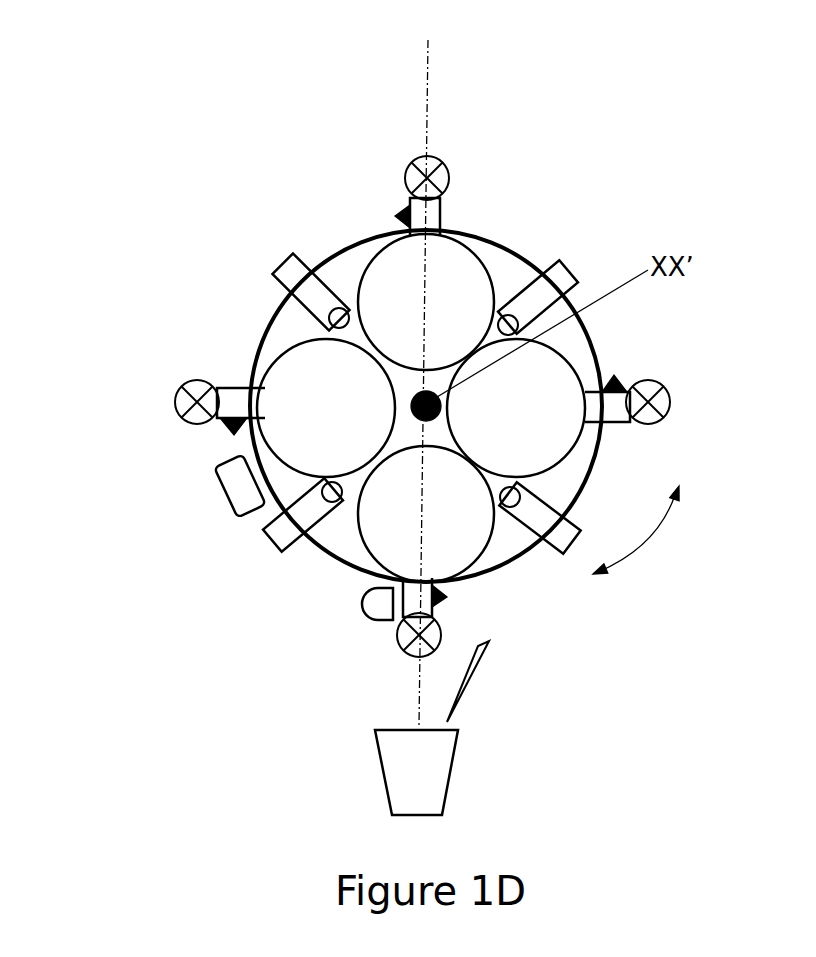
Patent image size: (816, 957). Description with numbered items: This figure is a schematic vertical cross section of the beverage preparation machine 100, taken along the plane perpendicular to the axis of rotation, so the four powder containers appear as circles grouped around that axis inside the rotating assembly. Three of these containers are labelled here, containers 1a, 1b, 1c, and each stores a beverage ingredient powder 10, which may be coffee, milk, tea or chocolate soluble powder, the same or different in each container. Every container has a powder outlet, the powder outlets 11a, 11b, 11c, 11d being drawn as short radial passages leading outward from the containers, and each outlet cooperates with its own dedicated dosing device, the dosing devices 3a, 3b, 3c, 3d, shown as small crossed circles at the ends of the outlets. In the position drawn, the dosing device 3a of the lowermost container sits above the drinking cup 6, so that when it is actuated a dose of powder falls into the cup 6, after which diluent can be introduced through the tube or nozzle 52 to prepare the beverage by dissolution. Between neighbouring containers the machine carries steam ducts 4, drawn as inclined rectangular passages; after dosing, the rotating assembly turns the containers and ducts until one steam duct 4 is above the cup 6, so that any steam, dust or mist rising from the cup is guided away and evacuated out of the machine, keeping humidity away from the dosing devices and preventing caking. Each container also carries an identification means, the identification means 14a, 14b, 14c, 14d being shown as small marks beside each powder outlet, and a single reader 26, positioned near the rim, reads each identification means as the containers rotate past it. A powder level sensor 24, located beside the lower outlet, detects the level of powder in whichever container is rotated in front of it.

The beverage preparation machine 100 is at (401, 302).
The beverage ingredient powder 10 is at (396, 349).
The container 1a is at (490, 523).
The container 1b is at (290, 345).
The container 1c is at (483, 267).
The dosing device 3a is at (403, 645).
The dosing device 3b is at (185, 380).
The dosing device 3c is at (458, 175).
The dosing device 3d is at (677, 401).
The steam duct 4 is at (268, 540).
The drinking cup 6 is at (458, 747).
The powder outlet 11a is at (433, 612).
The powder outlet 11b is at (225, 385).
The powder outlet 11c is at (443, 212).
The powder outlet 11d is at (610, 428).
The identification means 14a is at (447, 600).
The identification means 14b is at (232, 433).
The identification means 14c is at (397, 212).
The identification means 14d is at (613, 378).
The powder level sensor 24 is at (362, 610).
The reader 26 is at (222, 500).
The tube or nozzle 52 is at (480, 670).